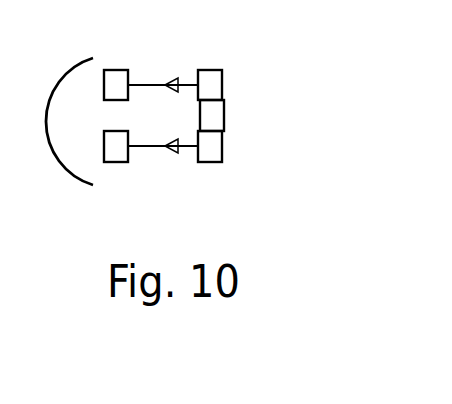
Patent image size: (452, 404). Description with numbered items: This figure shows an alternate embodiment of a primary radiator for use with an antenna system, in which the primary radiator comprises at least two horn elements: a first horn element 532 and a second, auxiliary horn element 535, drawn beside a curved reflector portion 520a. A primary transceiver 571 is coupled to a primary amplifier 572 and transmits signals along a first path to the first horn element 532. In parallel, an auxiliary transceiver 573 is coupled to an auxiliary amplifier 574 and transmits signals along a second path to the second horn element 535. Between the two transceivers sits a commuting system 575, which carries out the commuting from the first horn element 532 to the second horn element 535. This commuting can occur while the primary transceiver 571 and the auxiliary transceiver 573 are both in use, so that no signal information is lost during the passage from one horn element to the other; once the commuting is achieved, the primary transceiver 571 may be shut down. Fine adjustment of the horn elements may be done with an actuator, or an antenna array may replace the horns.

The substrate portion 520a is at (76, 180).
The first horn element 532 is at (115, 70).
The second (auxiliary) horn element 535 is at (115, 162).
The primary transceiver 571 is at (222, 85).
The primary amplifier 572 is at (173, 78).
The auxiliary transceiver 573 is at (222, 145).
The auxiliary amplifier 574 is at (175, 152).
The commuting system 575 is at (224, 113).